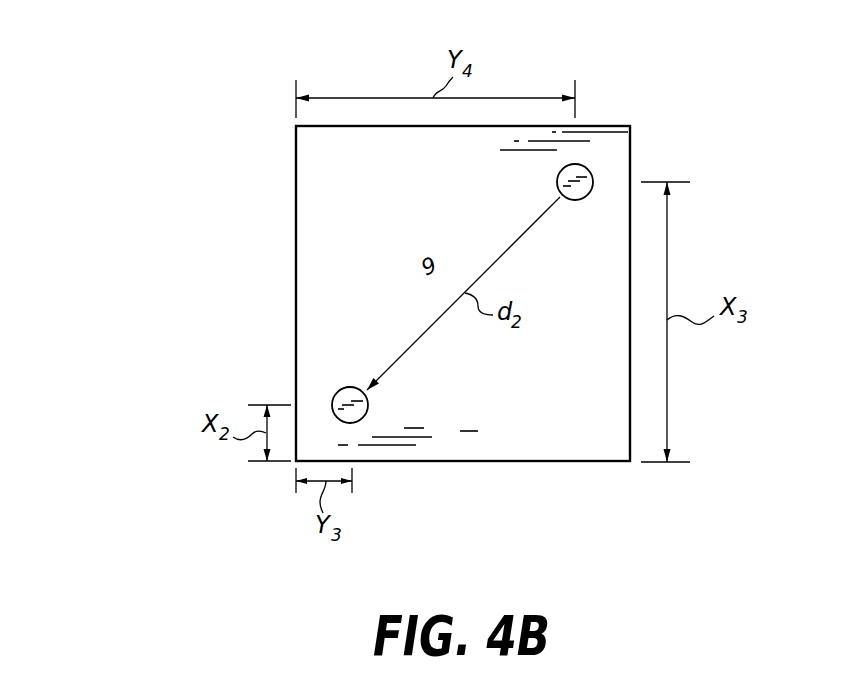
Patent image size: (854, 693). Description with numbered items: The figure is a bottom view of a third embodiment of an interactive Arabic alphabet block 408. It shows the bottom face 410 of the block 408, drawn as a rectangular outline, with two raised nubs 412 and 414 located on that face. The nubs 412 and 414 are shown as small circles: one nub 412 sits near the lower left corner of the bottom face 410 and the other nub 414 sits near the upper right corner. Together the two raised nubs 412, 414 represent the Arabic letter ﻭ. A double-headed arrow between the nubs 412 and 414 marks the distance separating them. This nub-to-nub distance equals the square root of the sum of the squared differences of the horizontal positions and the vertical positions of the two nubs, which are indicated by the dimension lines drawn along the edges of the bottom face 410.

The interactive Arabic alphabet block 408 is at (132, 148).
The bottom face 410 is at (594, 431).
The raised nub 412 is at (343, 392).
The raised nub 414 is at (557, 182).